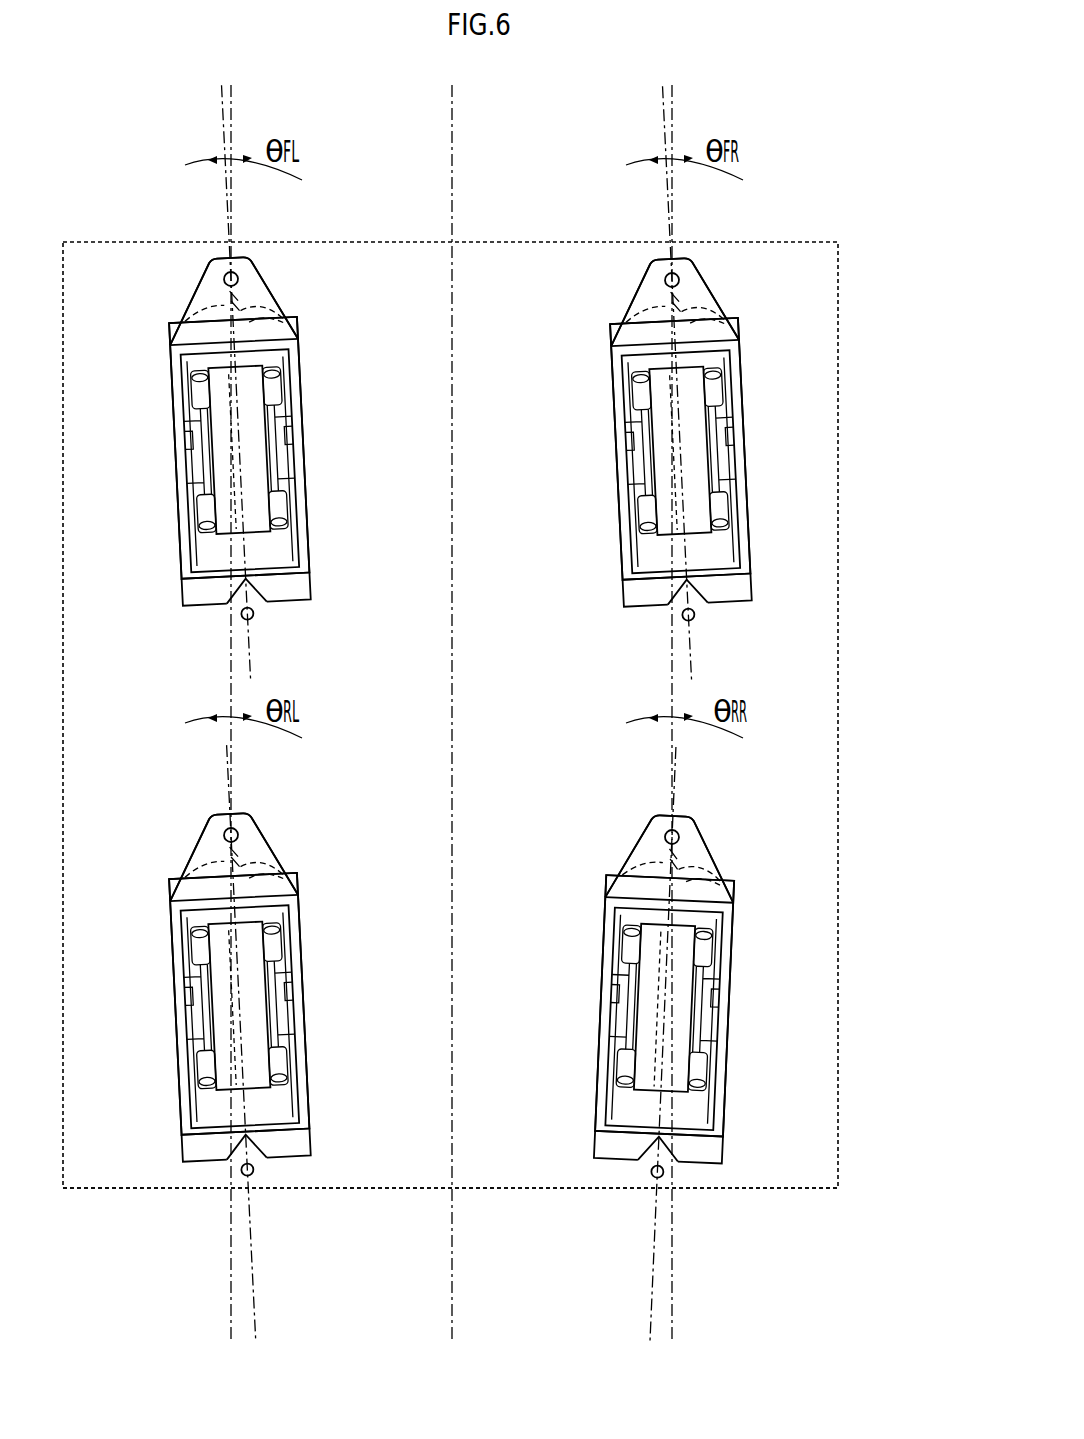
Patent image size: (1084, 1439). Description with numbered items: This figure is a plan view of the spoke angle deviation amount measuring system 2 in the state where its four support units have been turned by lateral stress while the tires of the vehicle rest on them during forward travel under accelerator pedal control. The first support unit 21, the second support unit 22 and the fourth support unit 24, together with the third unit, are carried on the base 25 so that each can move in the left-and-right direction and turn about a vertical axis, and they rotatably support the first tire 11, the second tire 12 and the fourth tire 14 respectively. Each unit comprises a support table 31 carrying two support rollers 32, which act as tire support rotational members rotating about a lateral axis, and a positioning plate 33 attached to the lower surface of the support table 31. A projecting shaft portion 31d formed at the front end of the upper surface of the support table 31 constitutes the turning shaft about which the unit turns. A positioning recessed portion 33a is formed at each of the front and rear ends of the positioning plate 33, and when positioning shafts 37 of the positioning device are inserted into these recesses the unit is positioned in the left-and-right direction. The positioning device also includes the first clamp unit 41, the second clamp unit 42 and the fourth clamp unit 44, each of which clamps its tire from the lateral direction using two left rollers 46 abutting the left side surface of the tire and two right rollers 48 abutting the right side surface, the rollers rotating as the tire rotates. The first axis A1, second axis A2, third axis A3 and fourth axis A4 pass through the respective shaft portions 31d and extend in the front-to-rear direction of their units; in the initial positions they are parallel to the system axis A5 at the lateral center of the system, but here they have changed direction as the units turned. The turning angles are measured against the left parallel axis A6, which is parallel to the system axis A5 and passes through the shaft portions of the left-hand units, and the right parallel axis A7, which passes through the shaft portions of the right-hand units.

The spoke angle deviation amount measuring system 2 is at (852, 390).
The base 25 is at (839, 623).
The first tire 11 is at (263, 599).
The second tire 12 is at (704, 599).
The fourth tire 14 is at (690, 1163).
The first support unit 21 is at (288, 303).
The second support unit 22 is at (729, 303).
The fourth support unit 24 is at (732, 863).
The support table 31 is at (213, 262).
The projecting shaft portion 31d is at (241, 289).
The support rollers 32 is at (200, 404).
The positioning plate 33 is at (195, 592).
The positioning recessed portion 33a is at (300, 325).
The positioning shaft 37 is at (181, 299).
The first clamp unit 41 is at (286, 462).
The second clamp unit 42 is at (727, 462).
The fourth clamp unit 44 is at (716, 1026).
The left rollers 46 is at (198, 412).
The right rollers 48 is at (280, 382).
The first axis A1 is at (222, 113).
The second axis A2 is at (662, 113).
The third axis A3 is at (226, 748).
The fourth axis A4 is at (678, 762).
The system axis A5 is at (453, 116).
The left parallel axis A6 is at (234, 102).
The right parallel axis A7 is at (674, 102).